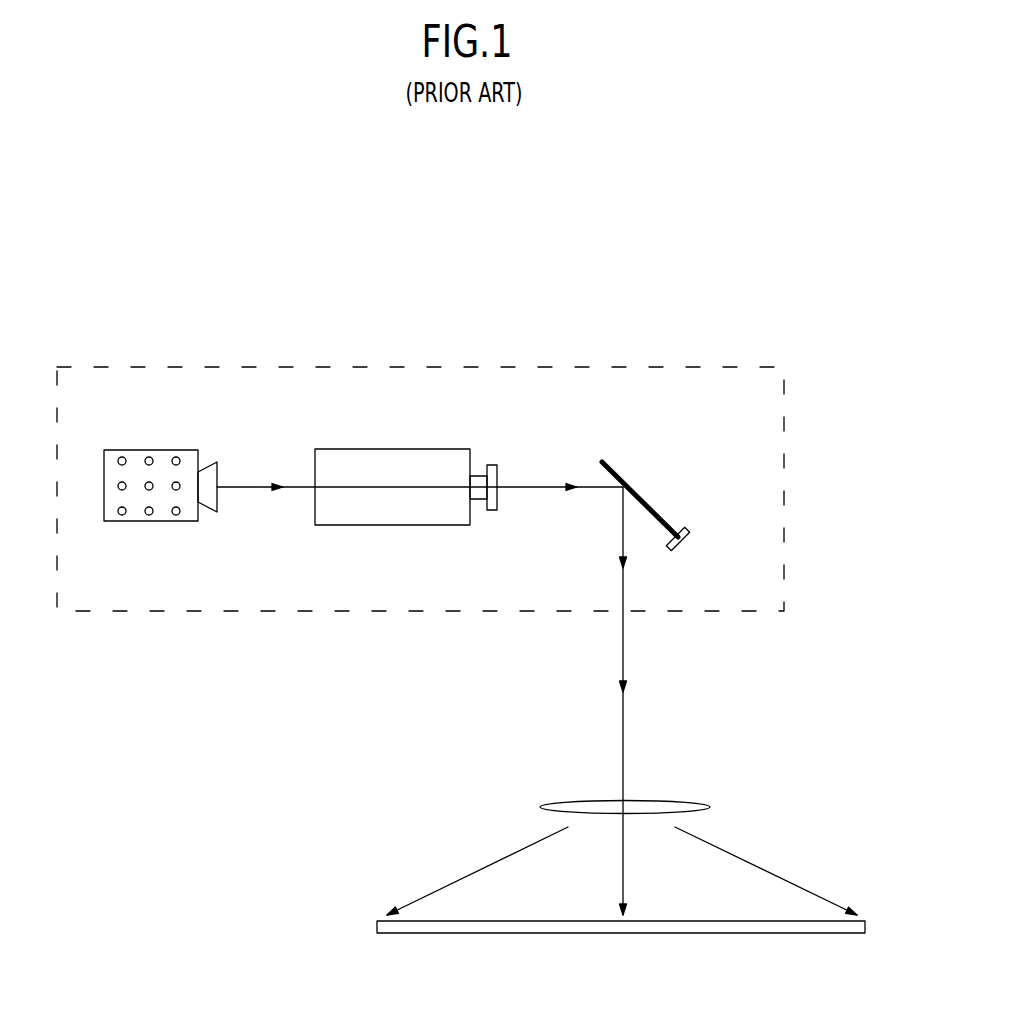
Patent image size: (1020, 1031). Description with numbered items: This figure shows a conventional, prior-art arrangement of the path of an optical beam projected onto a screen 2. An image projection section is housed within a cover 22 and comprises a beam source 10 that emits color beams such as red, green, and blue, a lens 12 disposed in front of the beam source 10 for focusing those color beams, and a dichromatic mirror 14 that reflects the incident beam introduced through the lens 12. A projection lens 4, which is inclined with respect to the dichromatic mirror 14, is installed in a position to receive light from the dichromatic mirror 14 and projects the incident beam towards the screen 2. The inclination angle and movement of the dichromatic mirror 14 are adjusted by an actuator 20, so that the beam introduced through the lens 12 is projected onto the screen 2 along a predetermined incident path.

The screen 2 is at (410, 925).
The projection lens 4 is at (710, 807).
The beam source 10 is at (190, 422).
The lens 12 is at (412, 422).
The dichromatic mirror 14 is at (600, 474).
The actuator 20 is at (680, 483).
The cover 22 is at (784, 483).